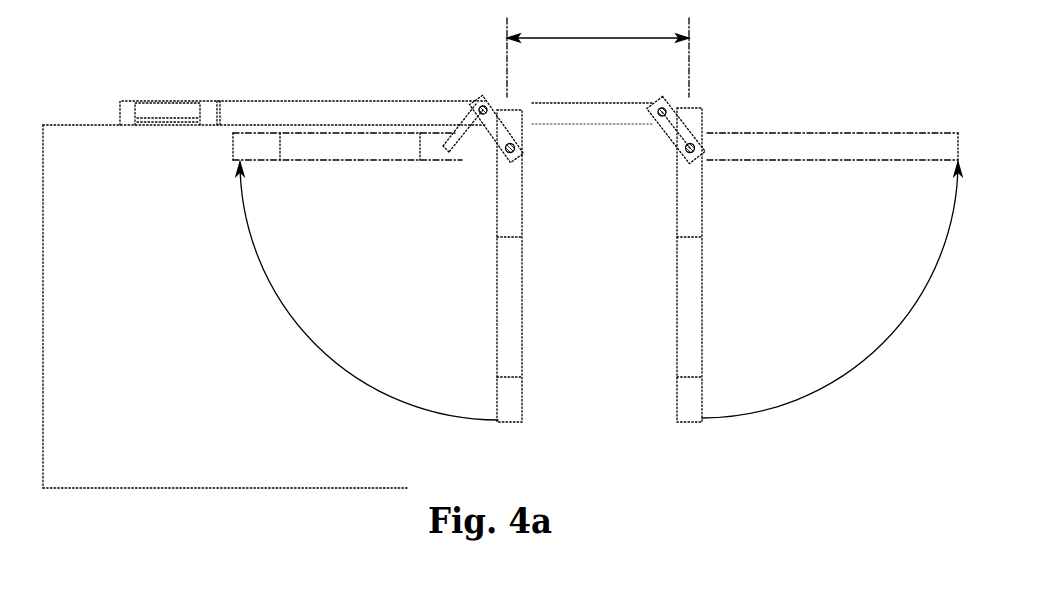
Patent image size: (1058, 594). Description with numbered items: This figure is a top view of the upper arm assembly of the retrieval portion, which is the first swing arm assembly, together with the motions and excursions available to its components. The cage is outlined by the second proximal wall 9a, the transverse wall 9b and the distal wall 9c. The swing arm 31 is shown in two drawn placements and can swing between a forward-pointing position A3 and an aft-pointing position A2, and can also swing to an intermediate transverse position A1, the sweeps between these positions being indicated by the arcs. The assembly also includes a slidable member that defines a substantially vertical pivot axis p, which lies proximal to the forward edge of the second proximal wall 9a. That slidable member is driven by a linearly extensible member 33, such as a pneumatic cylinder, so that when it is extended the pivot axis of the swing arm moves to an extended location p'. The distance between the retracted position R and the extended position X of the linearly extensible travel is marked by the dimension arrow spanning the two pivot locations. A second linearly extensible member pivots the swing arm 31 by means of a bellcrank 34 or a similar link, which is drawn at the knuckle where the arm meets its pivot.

The second proximal wall 9a is at (99, 125).
The transverse wall 9b is at (43, 298).
The distal wall 9c is at (335, 488).
The swing arm 31 is at (497, 283).
The linearly extensible member 33 is at (165, 102).
The bellcrank 34 is at (494, 147).
The pivot axis p is at (452, 82).
The extended location p' is at (618, 109).
The retracted position R is at (496, 57).
The extended position X is at (610, 57).
The intermediate transverse position A1 is at (601, 449).
The aft-pointing position A2 is at (347, 282).
The forward-pointing position A3 is at (832, 260).